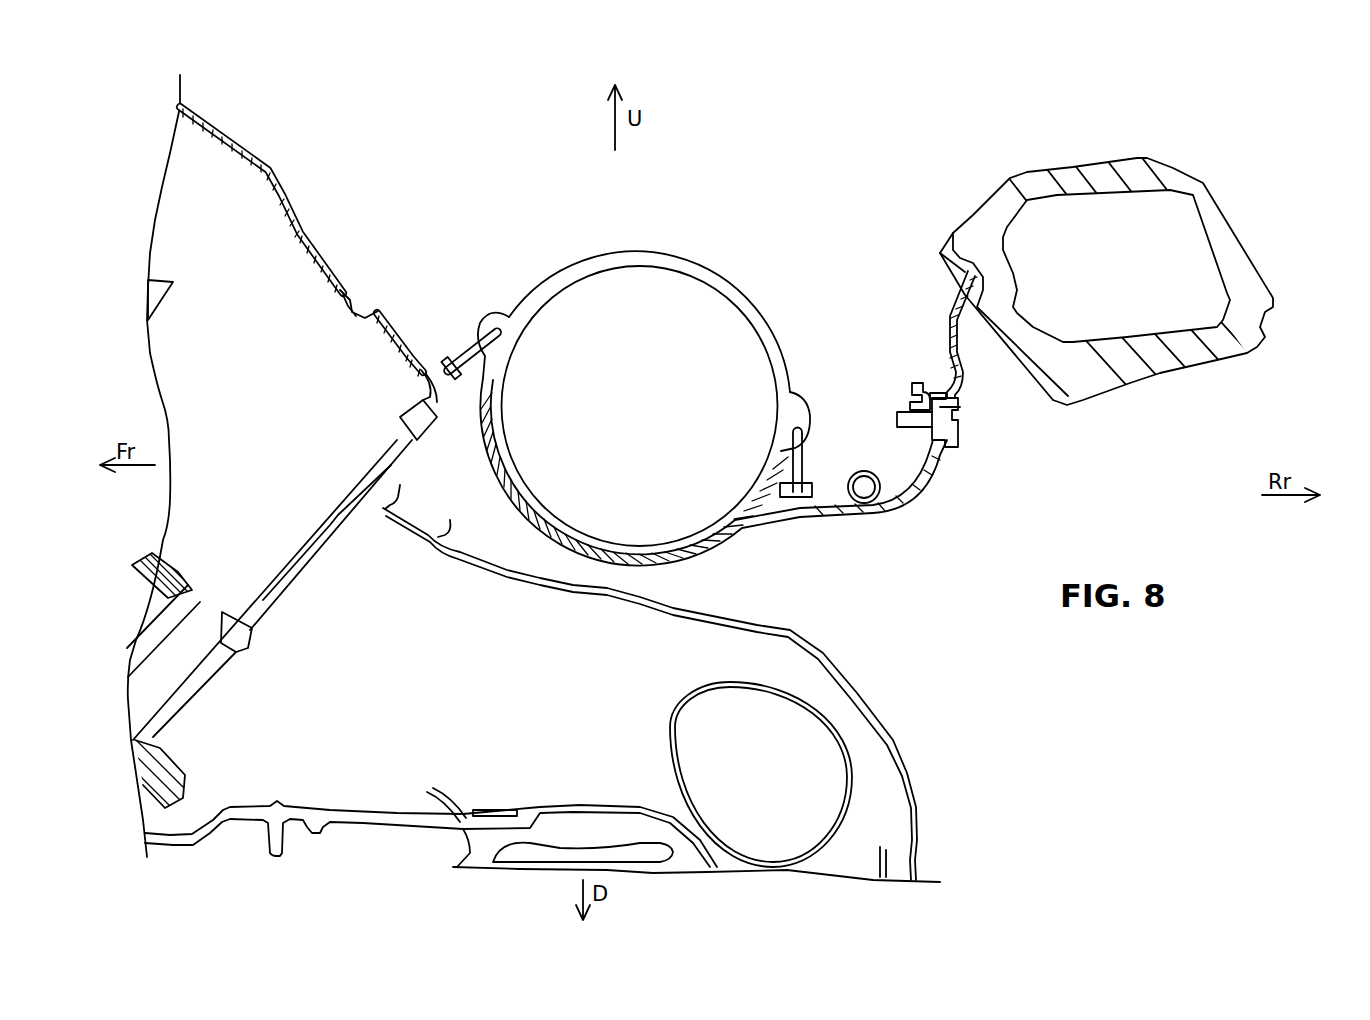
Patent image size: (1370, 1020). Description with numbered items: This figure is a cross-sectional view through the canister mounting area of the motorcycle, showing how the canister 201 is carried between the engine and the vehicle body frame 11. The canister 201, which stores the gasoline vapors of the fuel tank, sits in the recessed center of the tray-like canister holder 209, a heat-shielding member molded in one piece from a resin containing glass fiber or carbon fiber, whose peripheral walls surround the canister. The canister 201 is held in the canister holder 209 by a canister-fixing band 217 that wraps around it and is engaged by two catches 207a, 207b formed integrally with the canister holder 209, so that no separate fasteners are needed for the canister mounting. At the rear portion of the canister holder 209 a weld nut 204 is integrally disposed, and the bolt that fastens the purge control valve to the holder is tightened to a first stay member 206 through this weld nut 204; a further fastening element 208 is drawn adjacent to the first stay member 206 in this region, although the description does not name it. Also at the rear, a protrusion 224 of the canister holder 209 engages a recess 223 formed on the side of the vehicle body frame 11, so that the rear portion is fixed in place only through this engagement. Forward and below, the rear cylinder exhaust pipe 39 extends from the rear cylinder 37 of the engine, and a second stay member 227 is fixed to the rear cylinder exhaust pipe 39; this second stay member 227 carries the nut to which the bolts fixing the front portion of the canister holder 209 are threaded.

The vehicle body frame 11 is at (1170, 163).
The rear cylinder 37 is at (227, 131).
The rear cylinder exhaust pipe 39 is at (903, 760).
The canister 201 is at (581, 311).
The weld nut 204 is at (912, 395).
The first stay member 206 is at (927, 395).
The catch 207a is at (455, 345).
The catch 207b is at (806, 466).
The clip 208 is at (958, 420).
The canister holder 209 is at (913, 507).
The canister-fixing band 217 is at (686, 252).
The recess 223 is at (950, 260).
The protrusion 224 is at (968, 217).
The second stay member 227 is at (448, 529).